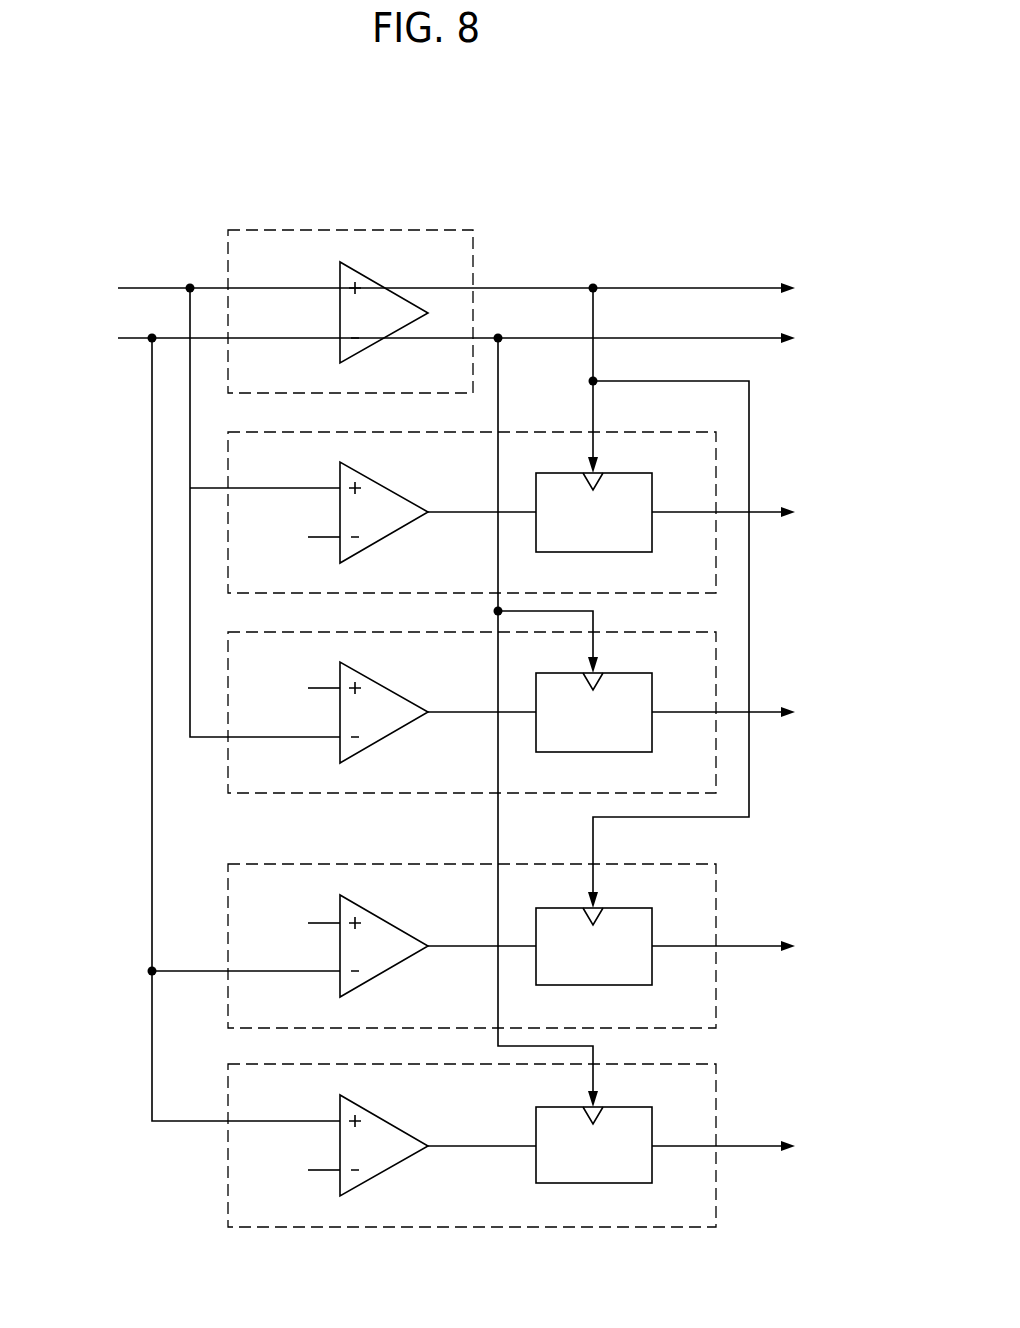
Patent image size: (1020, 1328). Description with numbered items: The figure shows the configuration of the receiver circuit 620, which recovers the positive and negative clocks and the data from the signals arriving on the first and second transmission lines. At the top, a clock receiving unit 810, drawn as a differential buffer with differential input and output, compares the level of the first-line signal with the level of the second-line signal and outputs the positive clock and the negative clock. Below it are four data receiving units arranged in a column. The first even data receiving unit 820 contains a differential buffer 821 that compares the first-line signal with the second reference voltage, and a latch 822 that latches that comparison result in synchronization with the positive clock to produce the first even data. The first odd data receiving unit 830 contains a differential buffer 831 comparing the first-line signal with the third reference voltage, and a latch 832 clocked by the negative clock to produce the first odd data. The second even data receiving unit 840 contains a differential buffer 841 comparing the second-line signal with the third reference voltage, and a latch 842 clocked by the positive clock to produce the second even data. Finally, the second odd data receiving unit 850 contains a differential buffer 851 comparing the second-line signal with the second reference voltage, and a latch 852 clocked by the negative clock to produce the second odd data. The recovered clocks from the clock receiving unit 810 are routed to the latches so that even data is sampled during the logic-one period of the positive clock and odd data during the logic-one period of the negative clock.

The receiver circuit 620 is at (735, 200).
The clock receiving unit 810 is at (412, 231).
The first even data receiving unit 820 is at (655, 432).
The differential buffer 821 is at (380, 488).
The latch 822 is at (622, 473).
The first odd data receiving unit 830 is at (655, 632).
The differential buffer 831 is at (380, 688).
The latch 832 is at (622, 673).
The second even data receiving unit 840 is at (655, 864).
The differential buffer 841 is at (380, 922).
The latch 842 is at (622, 908).
The second odd data receiving unit 850 is at (655, 1064).
The differential buffer 851 is at (380, 1122).
The latch 852 is at (622, 1107).